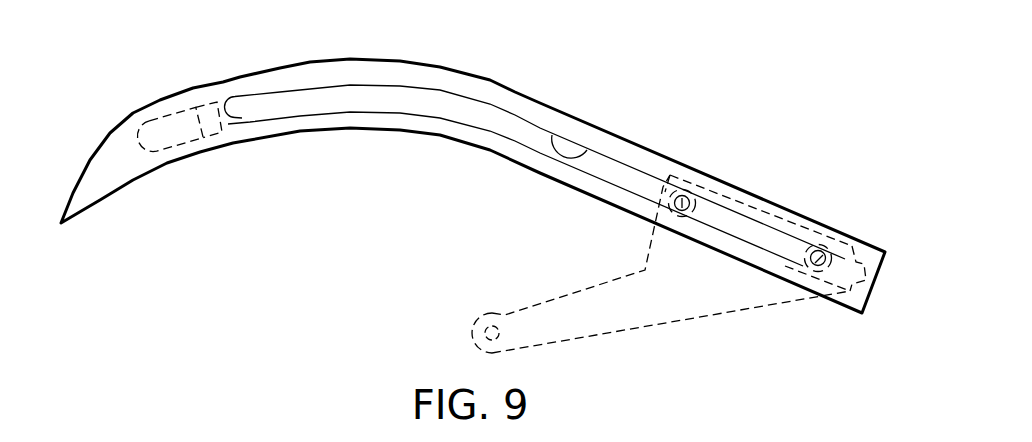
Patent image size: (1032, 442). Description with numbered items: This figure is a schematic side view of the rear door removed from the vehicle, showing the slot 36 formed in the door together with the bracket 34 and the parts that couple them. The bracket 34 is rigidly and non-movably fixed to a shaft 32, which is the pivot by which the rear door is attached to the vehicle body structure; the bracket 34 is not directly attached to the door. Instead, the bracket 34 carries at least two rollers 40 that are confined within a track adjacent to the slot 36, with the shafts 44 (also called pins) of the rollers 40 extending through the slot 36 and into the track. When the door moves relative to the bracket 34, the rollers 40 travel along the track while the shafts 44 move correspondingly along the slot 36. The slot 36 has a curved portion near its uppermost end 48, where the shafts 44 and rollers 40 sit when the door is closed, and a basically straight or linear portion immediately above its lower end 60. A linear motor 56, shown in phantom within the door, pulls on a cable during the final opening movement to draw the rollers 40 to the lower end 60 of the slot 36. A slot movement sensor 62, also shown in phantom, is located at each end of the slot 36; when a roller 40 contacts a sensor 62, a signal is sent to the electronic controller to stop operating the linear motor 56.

The shaft 32 is at (487, 315).
The bracket 34 is at (695, 283).
The slot 36 is at (551, 134).
The roller 40 is at (795, 224).
The shaft 44 is at (687, 189).
The uppermost end 48 is at (243, 93).
The linear motor 56 is at (163, 153).
The lower end 60 is at (745, 240).
The slot movement sensor 62 is at (227, 140).